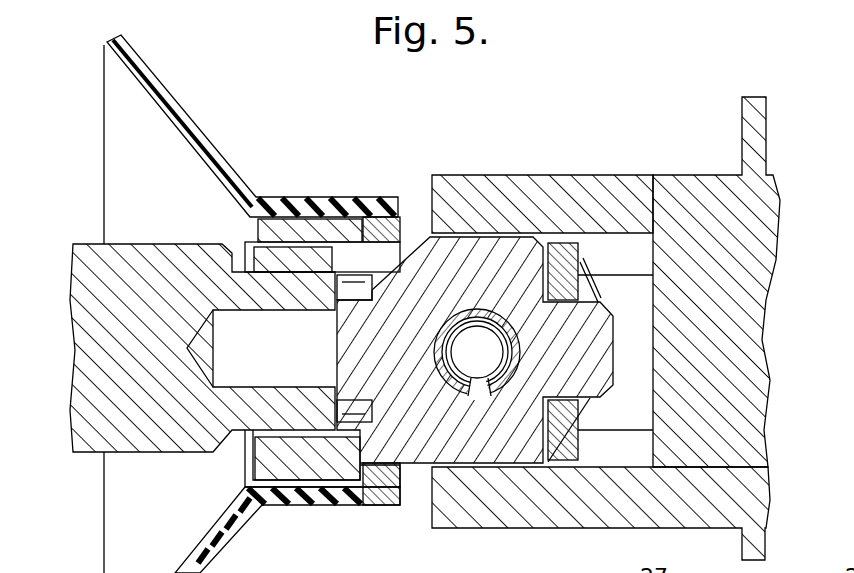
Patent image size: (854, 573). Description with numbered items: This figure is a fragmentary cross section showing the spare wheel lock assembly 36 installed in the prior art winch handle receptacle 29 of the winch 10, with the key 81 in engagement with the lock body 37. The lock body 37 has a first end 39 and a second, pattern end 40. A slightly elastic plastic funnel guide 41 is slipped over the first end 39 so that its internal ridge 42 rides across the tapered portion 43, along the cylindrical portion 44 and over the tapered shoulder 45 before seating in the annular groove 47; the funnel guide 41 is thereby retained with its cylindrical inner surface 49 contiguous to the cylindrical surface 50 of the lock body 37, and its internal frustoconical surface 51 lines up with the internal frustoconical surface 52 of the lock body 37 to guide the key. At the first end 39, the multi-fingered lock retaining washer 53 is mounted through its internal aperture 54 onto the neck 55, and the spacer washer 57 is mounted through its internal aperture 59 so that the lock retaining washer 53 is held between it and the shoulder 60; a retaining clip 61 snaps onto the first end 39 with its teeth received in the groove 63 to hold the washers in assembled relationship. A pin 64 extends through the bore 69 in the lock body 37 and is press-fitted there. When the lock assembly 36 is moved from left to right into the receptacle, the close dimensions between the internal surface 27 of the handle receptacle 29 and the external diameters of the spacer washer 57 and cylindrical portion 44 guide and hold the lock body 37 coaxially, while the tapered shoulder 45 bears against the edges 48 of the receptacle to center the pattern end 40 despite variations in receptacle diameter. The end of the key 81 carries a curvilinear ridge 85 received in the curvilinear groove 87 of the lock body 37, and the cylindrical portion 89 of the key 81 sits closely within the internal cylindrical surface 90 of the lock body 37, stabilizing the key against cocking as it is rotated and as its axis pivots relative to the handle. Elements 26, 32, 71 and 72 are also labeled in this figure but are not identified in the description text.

The winch 10 is at (742, 112).
The housing wall 26 is at (612, 245).
The internal surface of handle receptacle 27 is at (645, 243).
The winch handle receptacle 29 is at (596, 250).
The pocket 32 is at (655, 428).
The spare wheel lock assembly 36 is at (338, 130).
The lock body 37 is at (405, 228).
The first end of lock body 39 is at (615, 338).
The second end of lock body 40 is at (292, 212).
The funnel guide 41 is at (200, 135).
The internal ridge 42 is at (375, 230).
The tapered portion 43 is at (515, 220).
The cylindrical portion 44 is at (486, 220).
The tapered shoulder 45 is at (424, 232).
The annular groove 47 is at (372, 505).
The edges of handle receptacle 48 is at (430, 240).
The cylindrical inner surface 49 is at (270, 500).
The cylindrical surface 50 is at (305, 507).
The internal frustoconical surface 51 is at (178, 118).
The internal frustoconical surface 52 is at (250, 247).
The lock retaining washer 53 is at (532, 282).
The internal aperture 54 is at (522, 392).
The neck 55 is at (560, 400).
The spacer washer 57 is at (560, 242).
The internal aperture 59 is at (538, 300).
The shoulder 60 is at (540, 428).
The retaining clip 61 is at (590, 440).
The groove 63 is at (597, 290).
The pin 64 is at (450, 305).
The bore 69 is at (465, 398).
The wall element 71 is at (652, 568).
The wall element 72 is at (605, 572).
The key 81 is at (75, 455).
The curvilinear ridge 85 is at (352, 400).
The curvilinear groove 87 is at (355, 292).
The cylindrical portion of key 89 is at (250, 440).
The internal cylindrical surface 90 is at (245, 470).